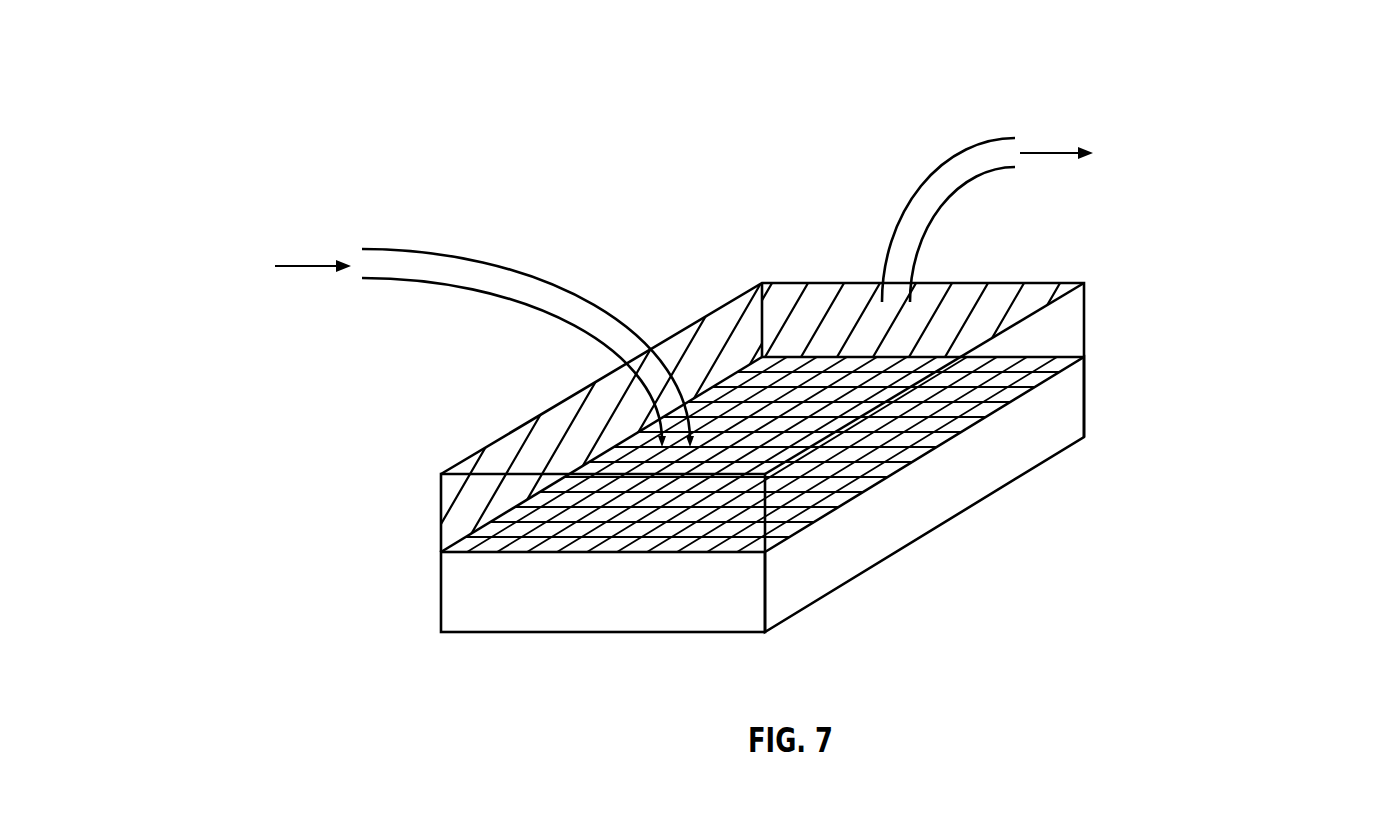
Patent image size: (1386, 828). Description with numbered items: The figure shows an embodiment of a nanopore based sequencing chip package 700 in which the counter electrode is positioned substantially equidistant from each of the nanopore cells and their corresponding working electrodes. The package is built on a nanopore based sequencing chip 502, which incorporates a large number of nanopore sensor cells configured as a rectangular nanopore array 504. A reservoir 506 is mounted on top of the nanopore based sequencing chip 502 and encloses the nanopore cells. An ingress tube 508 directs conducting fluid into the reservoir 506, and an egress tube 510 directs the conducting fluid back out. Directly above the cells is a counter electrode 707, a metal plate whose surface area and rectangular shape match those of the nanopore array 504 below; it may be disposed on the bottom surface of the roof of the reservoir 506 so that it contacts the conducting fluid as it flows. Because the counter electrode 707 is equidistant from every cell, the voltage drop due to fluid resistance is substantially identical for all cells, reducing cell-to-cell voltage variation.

The nanopore based sequencing chip package 700 is at (477, 70).
The nanopore based sequencing chip 502 is at (1087, 417).
The nanopore array 504 is at (996, 377).
The reservoir 506 is at (1073, 312).
The counter electrode 707 is at (1016, 283).
The ingress tube 508 is at (442, 252).
The egress tube 510 is at (992, 138).